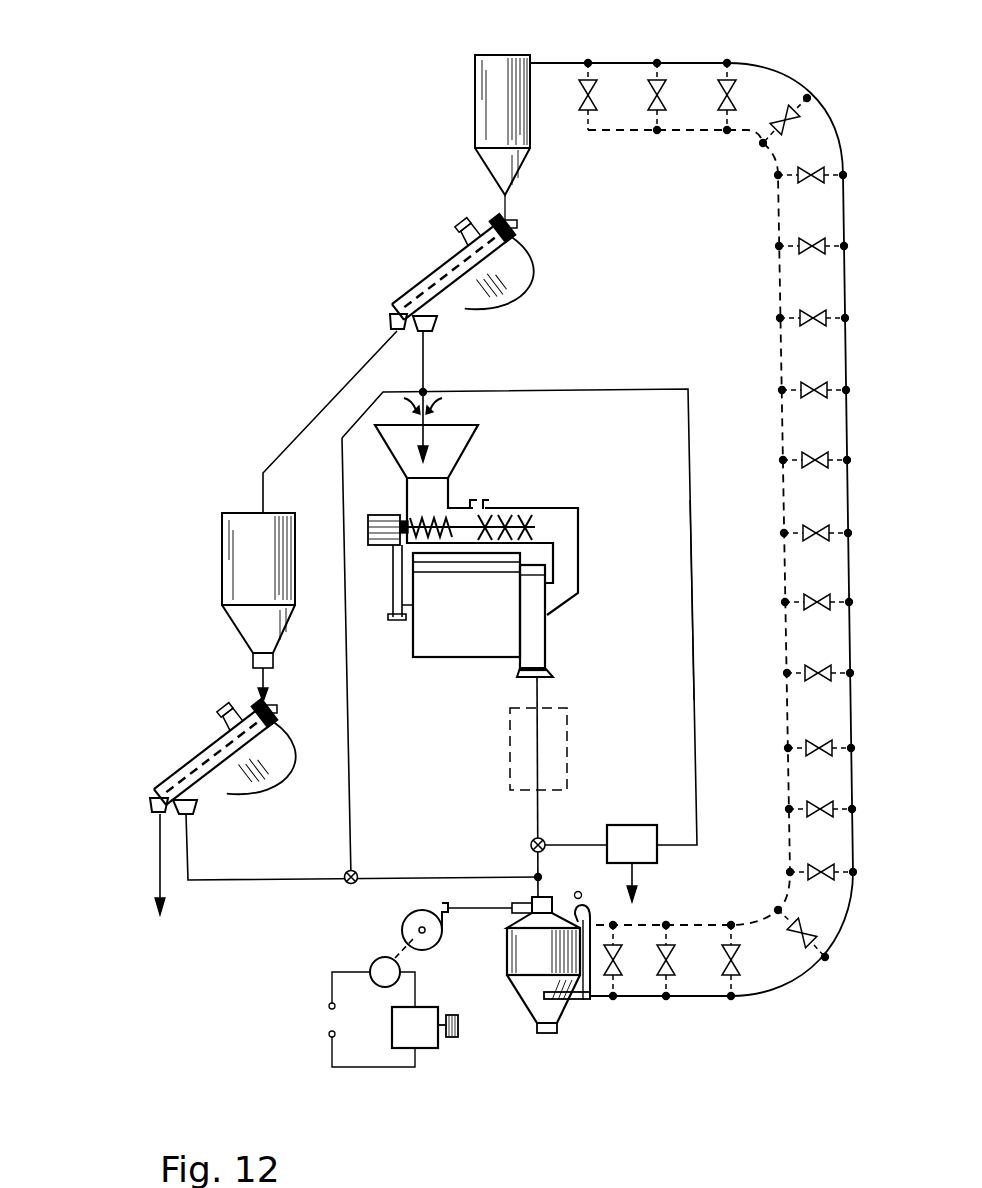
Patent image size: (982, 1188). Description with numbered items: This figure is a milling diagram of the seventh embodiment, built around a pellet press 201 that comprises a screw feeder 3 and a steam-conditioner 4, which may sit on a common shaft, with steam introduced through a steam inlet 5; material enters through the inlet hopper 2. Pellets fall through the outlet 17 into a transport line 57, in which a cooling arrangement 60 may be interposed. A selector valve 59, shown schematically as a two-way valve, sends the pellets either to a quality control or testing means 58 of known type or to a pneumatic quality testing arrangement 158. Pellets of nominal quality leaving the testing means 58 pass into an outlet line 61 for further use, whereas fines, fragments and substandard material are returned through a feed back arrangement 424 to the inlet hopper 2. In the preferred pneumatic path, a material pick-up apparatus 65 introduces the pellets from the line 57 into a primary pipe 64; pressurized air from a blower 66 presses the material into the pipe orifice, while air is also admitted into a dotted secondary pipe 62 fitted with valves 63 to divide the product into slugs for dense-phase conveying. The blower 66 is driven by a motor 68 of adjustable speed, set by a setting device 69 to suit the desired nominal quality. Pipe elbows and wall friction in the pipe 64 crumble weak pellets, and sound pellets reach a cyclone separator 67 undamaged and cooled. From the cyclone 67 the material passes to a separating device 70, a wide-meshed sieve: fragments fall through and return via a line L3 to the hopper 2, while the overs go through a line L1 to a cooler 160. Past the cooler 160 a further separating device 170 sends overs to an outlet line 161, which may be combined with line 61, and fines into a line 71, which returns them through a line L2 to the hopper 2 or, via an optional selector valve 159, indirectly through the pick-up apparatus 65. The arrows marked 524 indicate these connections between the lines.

The inlet hopper 2 is at (405, 445).
The screw feeder 3 is at (440, 506).
The steam-conditioner 4 is at (507, 515).
The steam inlet 5 is at (478, 500).
The outlet 17 is at (548, 690).
The transport line 57 is at (540, 805).
The quality control or testing means 58 is at (632, 844).
The selector device or valve 59 is at (530, 845).
The cooling arrangement 60 is at (567, 724).
The outlet line 61 is at (638, 875).
The secondary pipe 62 is at (785, 628).
The valves 63 is at (815, 680).
The primary pipe 64 is at (785, 995).
The material pick-up apparatus 65 is at (508, 1060).
The blower 66 is at (402, 928).
The cyclone separator 67 is at (476, 118).
The motor 68 is at (372, 985).
The setting device 69 is at (425, 1027).
The separating device 70 is at (520, 262).
The line 71 is at (266, 882).
The quality testing arrangement 158 is at (590, 1032).
The selector valve 159 is at (356, 870).
The cooler 160 is at (222, 568).
The outlet line 161 is at (158, 872).
The further separating device 170 is at (262, 768).
The pellet press 201 is at (585, 462).
The feed back arrangement 424 is at (690, 616).
The line connection 524 is at (515, 308).
The line L1 is at (340, 375).
The line L2 is at (347, 718).
The line L3 is at (424, 365).